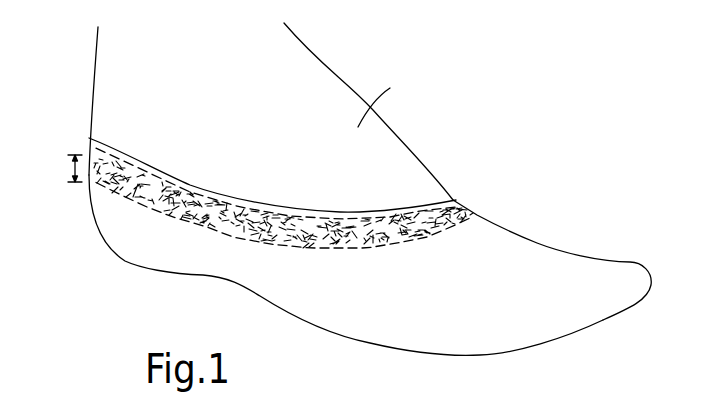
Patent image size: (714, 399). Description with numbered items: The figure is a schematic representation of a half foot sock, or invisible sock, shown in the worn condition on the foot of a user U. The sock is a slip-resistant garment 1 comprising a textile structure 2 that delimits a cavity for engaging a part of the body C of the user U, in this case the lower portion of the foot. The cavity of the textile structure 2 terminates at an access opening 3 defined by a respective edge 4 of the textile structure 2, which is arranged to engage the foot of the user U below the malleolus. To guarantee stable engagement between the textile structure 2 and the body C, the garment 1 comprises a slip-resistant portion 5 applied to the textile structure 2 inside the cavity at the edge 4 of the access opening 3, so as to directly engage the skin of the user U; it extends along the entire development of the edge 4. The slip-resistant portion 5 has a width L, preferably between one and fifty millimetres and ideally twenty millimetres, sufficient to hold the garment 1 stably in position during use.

The slip-resistant garment 1 is at (527, 158).
The textile structure 2 is at (125, 262).
The access opening 3 is at (122, 155).
The edge 4 is at (153, 168).
The slip-resistant portion 5 is at (397, 217).
The user U is at (338, 72).
The body C is at (383, 100).
The width L is at (71, 168).